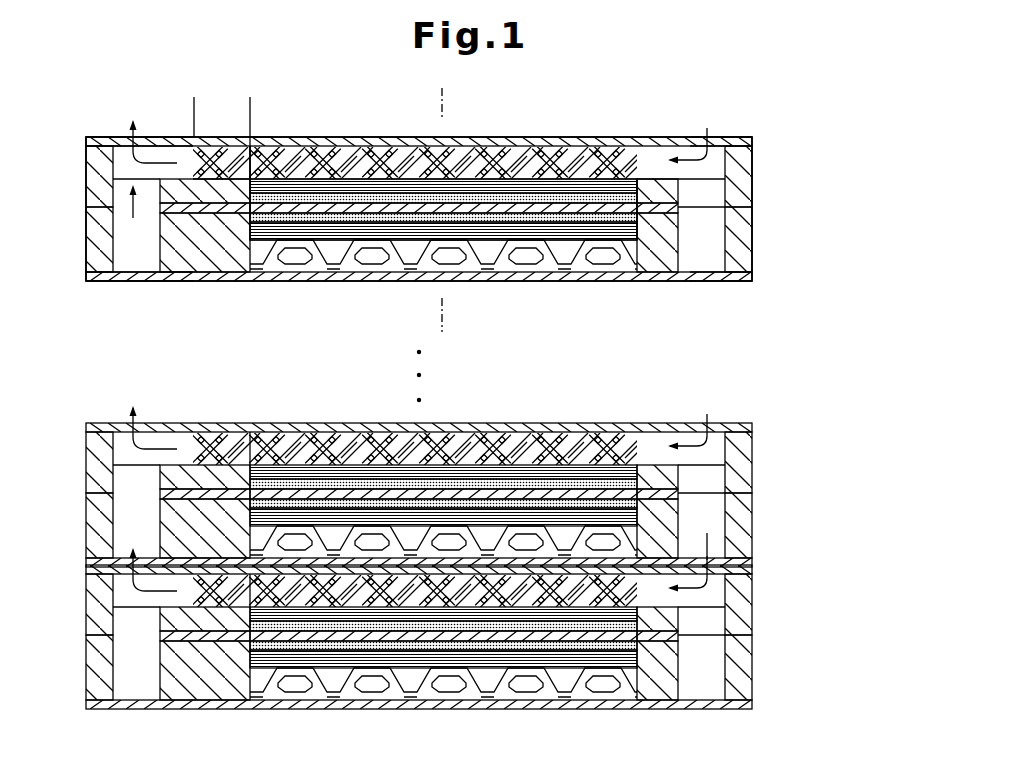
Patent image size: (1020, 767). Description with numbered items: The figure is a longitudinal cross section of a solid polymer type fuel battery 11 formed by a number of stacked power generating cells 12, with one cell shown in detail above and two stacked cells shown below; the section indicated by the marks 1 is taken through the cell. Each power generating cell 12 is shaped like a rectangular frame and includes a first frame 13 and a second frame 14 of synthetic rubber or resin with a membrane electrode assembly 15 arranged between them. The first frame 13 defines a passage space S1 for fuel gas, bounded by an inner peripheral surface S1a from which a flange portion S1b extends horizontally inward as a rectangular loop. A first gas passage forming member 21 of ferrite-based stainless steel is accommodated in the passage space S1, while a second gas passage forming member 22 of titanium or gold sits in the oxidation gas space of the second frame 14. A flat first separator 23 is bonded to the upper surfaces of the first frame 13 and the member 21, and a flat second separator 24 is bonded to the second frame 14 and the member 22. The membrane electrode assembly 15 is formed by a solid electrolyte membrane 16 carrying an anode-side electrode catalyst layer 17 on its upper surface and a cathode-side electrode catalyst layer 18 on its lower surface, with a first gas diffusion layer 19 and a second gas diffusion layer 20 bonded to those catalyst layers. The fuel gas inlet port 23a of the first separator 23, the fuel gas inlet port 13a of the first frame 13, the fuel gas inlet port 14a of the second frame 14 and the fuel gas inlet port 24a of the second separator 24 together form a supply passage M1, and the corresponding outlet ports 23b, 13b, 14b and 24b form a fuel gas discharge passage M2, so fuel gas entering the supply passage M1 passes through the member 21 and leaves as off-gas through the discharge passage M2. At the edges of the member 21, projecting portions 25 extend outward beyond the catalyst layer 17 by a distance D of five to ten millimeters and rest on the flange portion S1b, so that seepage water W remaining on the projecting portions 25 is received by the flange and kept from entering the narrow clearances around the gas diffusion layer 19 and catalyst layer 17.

The section line 1 is at (442, 88).
The fuel battery 11 is at (664, 122).
The power generating cell 12 is at (800, 137).
The first frame 13 is at (753, 180).
The fuel gas inlet port 13a is at (715, 193).
The fuel gas outlet port 13b is at (125, 177).
The second frame 14 is at (752, 243).
The fuel gas inlet port 14a is at (687, 267).
The fuel gas outlet port 14b is at (117, 250).
The membrane electrode assembly 15 is at (494, 192).
The solid electrolyte membrane 16 is at (458, 207).
The electrode catalyst layer 17 is at (545, 198).
The electrode catalyst layer 18 is at (516, 232).
The first gas diffusion layer 19 is at (573, 192).
The second gas diffusion layer 20 is at (553, 232).
The first gas passage forming member 21 is at (337, 148).
The second gas passage forming member 22 is at (368, 258).
The first separator 23 is at (277, 148).
The fuel gas inlet port 23a is at (687, 137).
The fuel gas outlet port 23b is at (150, 168).
The second separator 24 is at (283, 277).
The fuel gas inlet port 24a is at (715, 276).
The fuel gas outlet port 24b is at (152, 277).
The projecting portion 25 is at (229, 162).
The passage space for fuel gas S1 is at (651, 162).
The inner peripheral surface S1a is at (715, 138).
The flange portion S1b is at (187, 178).
The supply passage M1 is at (708, 255).
The fuel gas discharge passage M2 is at (146, 260).
The distance D is at (202, 102).
The seepage water W is at (258, 142).